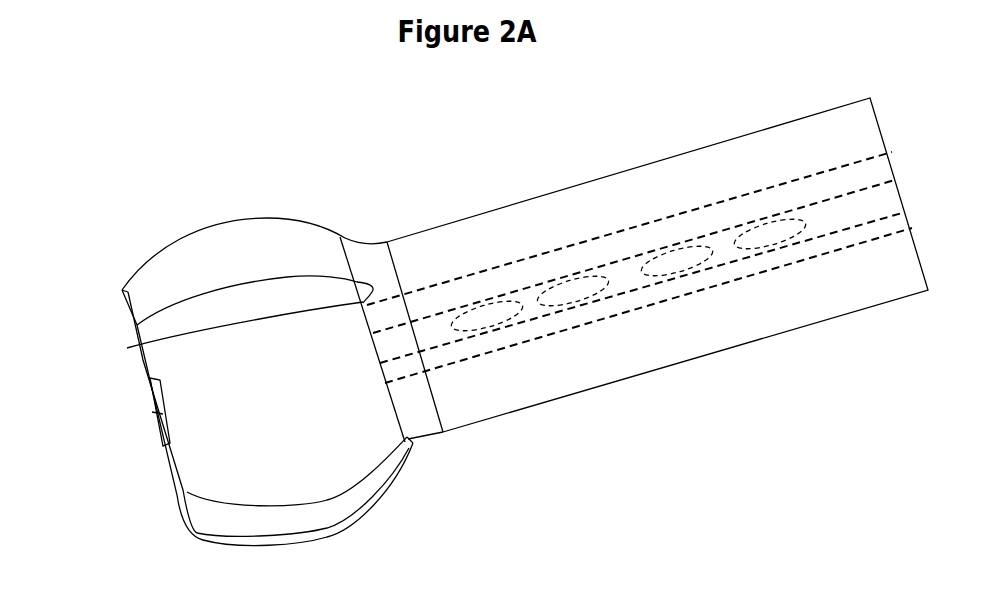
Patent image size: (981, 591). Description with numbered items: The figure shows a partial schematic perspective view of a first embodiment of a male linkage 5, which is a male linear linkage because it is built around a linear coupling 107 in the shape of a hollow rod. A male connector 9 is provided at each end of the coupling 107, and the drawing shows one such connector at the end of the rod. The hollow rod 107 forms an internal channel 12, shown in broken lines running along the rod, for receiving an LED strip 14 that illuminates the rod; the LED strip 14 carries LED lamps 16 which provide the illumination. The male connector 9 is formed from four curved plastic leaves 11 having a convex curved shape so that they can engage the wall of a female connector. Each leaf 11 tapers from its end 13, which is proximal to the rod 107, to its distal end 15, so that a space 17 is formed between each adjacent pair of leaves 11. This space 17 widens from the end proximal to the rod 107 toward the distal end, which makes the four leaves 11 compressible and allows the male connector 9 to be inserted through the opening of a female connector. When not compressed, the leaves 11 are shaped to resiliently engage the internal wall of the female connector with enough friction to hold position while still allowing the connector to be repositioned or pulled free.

The male linkage 5 is at (528, 158).
The male connector 9 is at (401, 522).
The curved plastic leaf 11 is at (210, 227).
The internal channel 12 is at (777, 185).
The proximal end of leaf 13 is at (327, 230).
The LED strip 14 is at (548, 288).
The distal end of leaf 15 is at (120, 292).
The LED lamp 16 is at (760, 247).
The space 17 is at (150, 358).
The linear coupling 107 is at (660, 372).